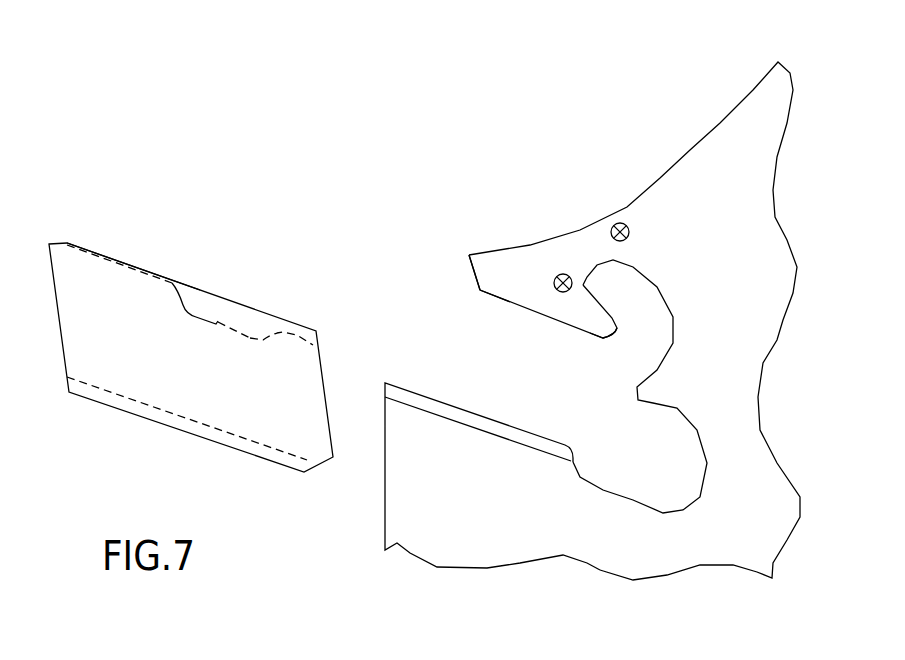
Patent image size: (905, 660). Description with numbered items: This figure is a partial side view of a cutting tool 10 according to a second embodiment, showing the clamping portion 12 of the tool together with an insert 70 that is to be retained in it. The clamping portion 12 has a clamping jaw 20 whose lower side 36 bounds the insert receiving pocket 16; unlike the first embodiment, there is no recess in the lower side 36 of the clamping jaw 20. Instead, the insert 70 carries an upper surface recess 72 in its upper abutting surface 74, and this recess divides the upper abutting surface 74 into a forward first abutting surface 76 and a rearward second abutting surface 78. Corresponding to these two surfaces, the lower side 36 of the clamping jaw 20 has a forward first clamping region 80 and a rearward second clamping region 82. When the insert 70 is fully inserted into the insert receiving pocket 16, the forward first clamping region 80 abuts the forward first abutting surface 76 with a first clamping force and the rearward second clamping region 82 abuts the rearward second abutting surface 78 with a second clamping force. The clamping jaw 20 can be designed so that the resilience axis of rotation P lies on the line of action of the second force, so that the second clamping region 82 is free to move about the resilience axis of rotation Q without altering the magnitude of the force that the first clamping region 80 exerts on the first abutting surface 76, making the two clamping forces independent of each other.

The cutting tool 10 is at (285, 72).
The clamping portion 12 is at (527, 140).
The insert receiving pocket 16 is at (412, 330).
The clamping jaw 20 is at (503, 270).
The lower side 36 is at (477, 292).
The insert 70 is at (93, 195).
The upper surface recess 72 is at (217, 322).
The upper abutting surface 74 is at (110, 253).
The forward first abutting surface 76 is at (174, 280).
The rearward second abutting surface 78 is at (300, 332).
The forward first clamping region 80 is at (488, 295).
The rearward second clamping region 82 is at (593, 340).
The resilience axis of rotation P is at (627, 217).
The resilience axis of rotation Q is at (547, 273).